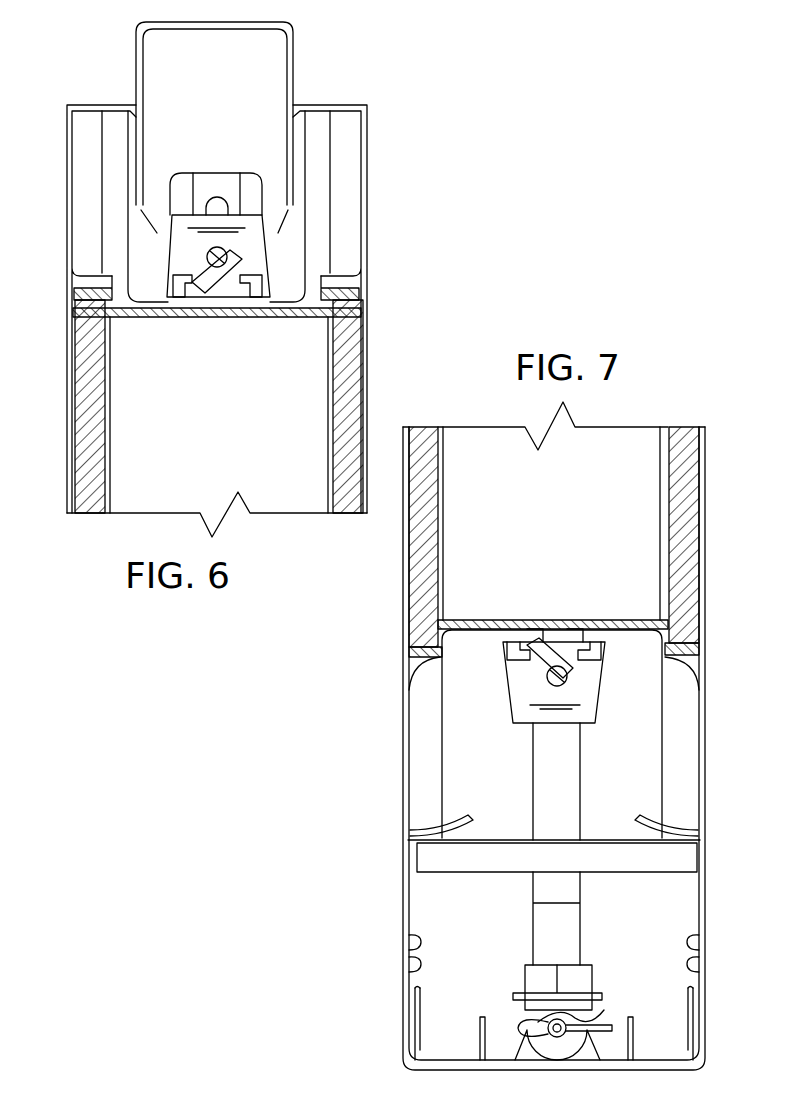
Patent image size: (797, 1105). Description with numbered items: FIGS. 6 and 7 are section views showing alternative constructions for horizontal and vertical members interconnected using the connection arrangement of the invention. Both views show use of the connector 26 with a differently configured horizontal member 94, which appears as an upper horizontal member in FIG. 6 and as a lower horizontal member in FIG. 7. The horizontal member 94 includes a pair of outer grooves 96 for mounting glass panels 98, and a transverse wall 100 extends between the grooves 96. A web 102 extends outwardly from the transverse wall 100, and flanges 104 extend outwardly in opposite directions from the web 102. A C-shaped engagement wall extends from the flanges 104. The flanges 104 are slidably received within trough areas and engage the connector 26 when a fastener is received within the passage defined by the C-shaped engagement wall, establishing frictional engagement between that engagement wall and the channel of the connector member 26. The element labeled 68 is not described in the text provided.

In FIG. 6, the connector 26 is at (283, 255).
In FIG. 7, the connector 26 is at (481, 684).
In FIG. 6, the valve body 68 is at (164, 242).
In FIG. 7, the valve body 68 is at (509, 704).
In FIG. 6, the horizontal member 94 is at (372, 176).
In FIG. 7, the horizontal member 94 is at (554, 736).
In FIG. 6, the outer grooves 96 is at (73, 302).
In FIG. 7, the outer grooves 96 is at (554, 650).
In FIG. 6, the glass panels 98 is at (83, 370).
In FIG. 7, the glass panels 98 is at (554, 537).
In FIG. 6, the transverse wall 100 is at (140, 320).
In FIG. 7, the transverse wall 100 is at (553, 624).
In FIG. 6, the web 102 is at (196, 322).
In FIG. 7, the web 102 is at (550, 662).
In FIG. 6, the flanges 104 is at (185, 277).
In FIG. 7, the flanges 104 is at (516, 656).